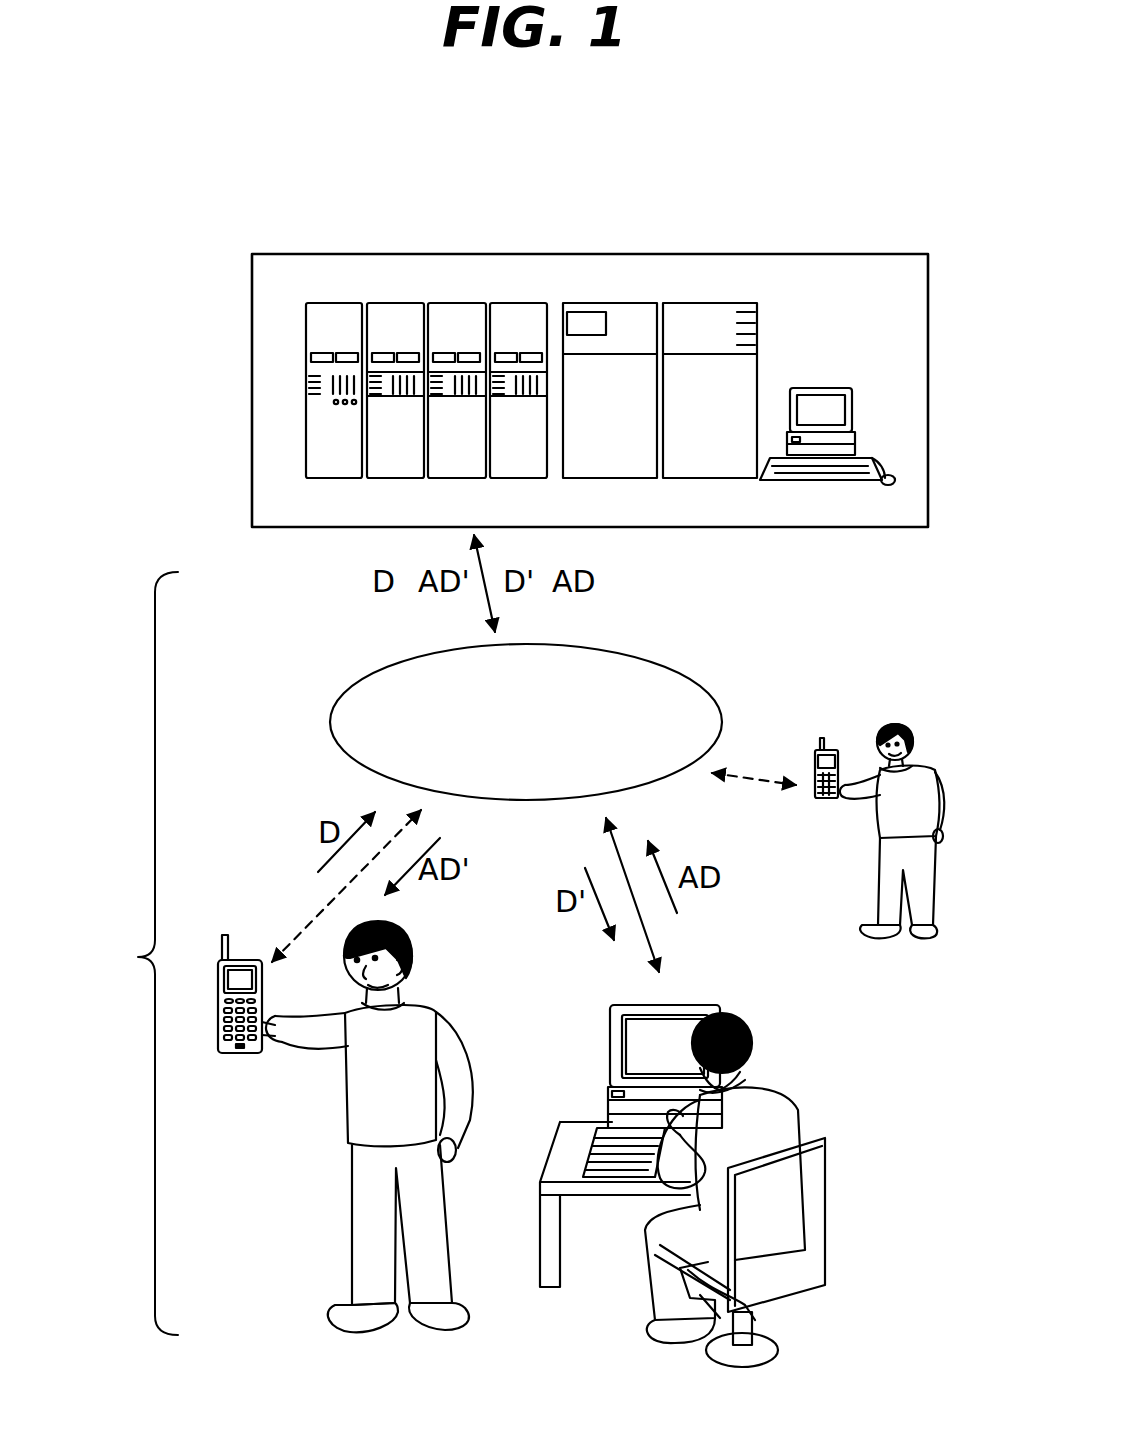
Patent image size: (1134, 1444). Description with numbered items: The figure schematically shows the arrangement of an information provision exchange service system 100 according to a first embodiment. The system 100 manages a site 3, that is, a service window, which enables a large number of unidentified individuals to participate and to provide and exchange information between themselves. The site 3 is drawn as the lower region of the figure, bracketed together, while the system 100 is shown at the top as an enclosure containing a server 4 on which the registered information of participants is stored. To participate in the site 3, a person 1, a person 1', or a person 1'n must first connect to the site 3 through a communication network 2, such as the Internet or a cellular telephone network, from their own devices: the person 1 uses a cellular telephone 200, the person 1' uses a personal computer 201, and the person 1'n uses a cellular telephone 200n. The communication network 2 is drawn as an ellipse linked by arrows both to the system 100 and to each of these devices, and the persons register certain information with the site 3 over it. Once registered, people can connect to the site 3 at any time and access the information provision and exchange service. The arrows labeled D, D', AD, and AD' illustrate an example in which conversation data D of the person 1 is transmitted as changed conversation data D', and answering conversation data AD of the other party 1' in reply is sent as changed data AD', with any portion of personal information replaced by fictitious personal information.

The information provision exchange service system 100 is at (822, 253).
The server 4 is at (627, 315).
The communication network 2 is at (622, 654).
The site 3 is at (139, 953).
The cellular telephone 200 is at (240, 1058).
The person 1 is at (367, 1126).
The personal computer 201 is at (608, 1050).
The person 1' is at (682, 1190).
The cellular telephone 200n is at (833, 748).
The person 1'n is at (866, 831).